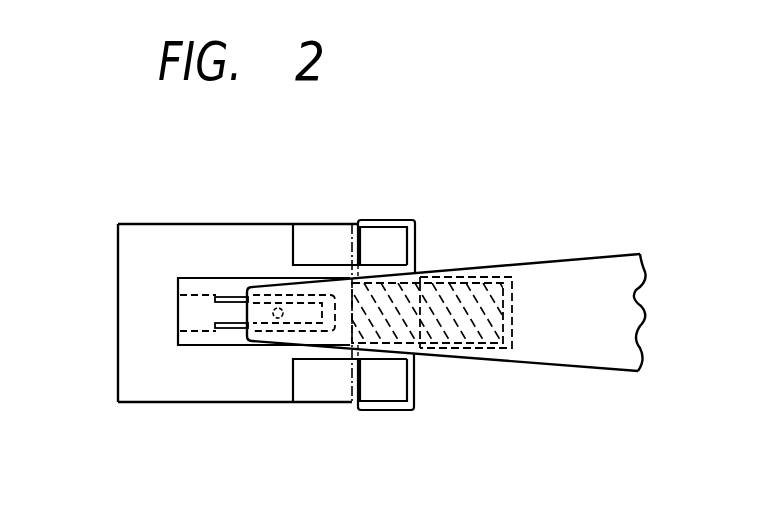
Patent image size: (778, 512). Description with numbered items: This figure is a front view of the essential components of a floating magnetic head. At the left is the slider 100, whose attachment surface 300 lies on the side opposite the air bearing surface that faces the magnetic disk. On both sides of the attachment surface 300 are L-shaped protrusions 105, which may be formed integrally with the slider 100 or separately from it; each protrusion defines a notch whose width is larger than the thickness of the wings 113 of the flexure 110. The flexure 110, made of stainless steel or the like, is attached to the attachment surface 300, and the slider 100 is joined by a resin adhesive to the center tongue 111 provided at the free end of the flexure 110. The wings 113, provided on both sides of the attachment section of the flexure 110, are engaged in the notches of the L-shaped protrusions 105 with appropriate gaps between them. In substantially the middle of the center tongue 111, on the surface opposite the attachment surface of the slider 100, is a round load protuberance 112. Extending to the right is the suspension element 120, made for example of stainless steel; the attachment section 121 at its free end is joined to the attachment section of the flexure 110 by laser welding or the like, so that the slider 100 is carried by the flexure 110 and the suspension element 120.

The slider 100 is at (185, 204).
The L-shaped protrusions 105 is at (312, 232).
The flexure 110 is at (193, 345).
The center tongue 111 is at (237, 315).
The load protuberance 112 is at (276, 320).
The wings 113 is at (415, 224).
The suspension element 120 is at (567, 288).
The attachment section 121 is at (477, 330).
The attachment surface 300 is at (137, 308).